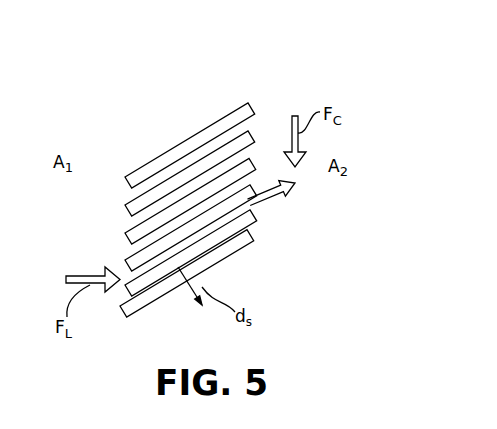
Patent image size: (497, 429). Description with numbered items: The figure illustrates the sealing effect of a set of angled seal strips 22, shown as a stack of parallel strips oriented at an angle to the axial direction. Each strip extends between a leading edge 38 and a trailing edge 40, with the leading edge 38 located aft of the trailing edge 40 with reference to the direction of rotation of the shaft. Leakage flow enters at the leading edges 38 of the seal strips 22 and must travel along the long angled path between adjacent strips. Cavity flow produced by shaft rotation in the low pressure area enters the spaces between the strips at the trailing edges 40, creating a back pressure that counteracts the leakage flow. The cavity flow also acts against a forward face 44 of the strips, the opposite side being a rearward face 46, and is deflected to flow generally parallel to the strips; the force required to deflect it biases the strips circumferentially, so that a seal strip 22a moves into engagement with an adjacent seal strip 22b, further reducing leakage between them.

The seal strips 22 is at (158, 157).
The trailing edge 40 is at (257, 127).
The leading edge 38 is at (127, 243).
The forward face 44 is at (130, 278).
The rearward face 46 is at (238, 255).
The seal strip 22a is at (253, 217).
The adjacent seal strip 22b is at (255, 236).